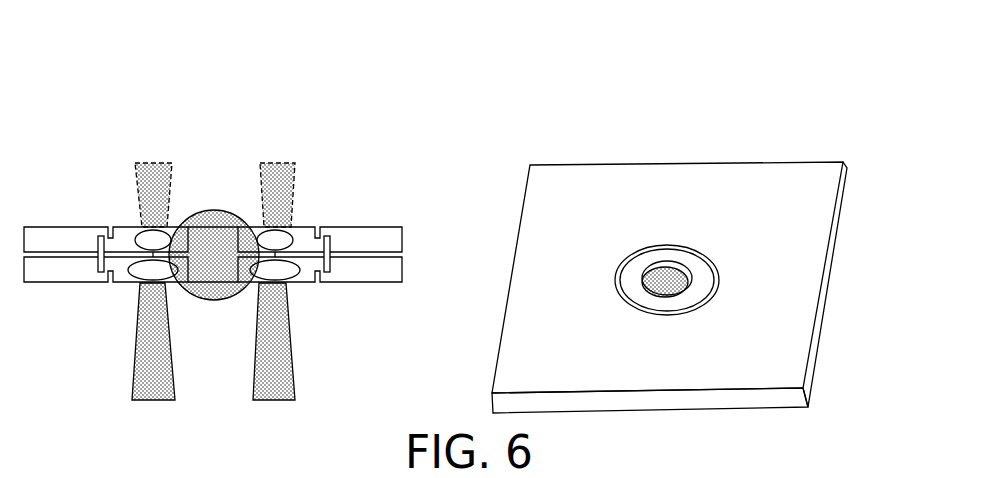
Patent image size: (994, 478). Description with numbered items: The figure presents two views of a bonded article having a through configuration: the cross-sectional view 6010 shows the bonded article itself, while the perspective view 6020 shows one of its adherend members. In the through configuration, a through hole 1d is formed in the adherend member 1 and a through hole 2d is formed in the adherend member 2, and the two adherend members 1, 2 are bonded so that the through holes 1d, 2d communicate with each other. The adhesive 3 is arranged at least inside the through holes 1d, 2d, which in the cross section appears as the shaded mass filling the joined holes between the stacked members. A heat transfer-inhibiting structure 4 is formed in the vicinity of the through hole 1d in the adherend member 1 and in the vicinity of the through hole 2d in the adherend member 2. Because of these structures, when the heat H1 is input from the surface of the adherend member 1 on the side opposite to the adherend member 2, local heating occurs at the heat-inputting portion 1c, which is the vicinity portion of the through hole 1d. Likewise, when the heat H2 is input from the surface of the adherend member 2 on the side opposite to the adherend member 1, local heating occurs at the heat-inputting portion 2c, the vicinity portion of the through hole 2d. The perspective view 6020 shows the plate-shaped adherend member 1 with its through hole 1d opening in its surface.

The cross-sectional view of bonded article 6010 is at (417, 113).
The perspective view of adherend member 6020 is at (853, 113).
The adherend member 1 is at (405, 265).
The adherend member 2 is at (405, 234).
The adhesive 3 is at (233, 222).
The heat transfer-inhibiting structure 4 is at (101, 234).
The heat-inputting portion 1c is at (163, 282).
The through hole 1d is at (228, 300).
The heat-inputting portion 2c is at (143, 236).
The through hole 2d is at (215, 210).
The heat H1 is at (137, 345).
The heat H2 is at (139, 195).